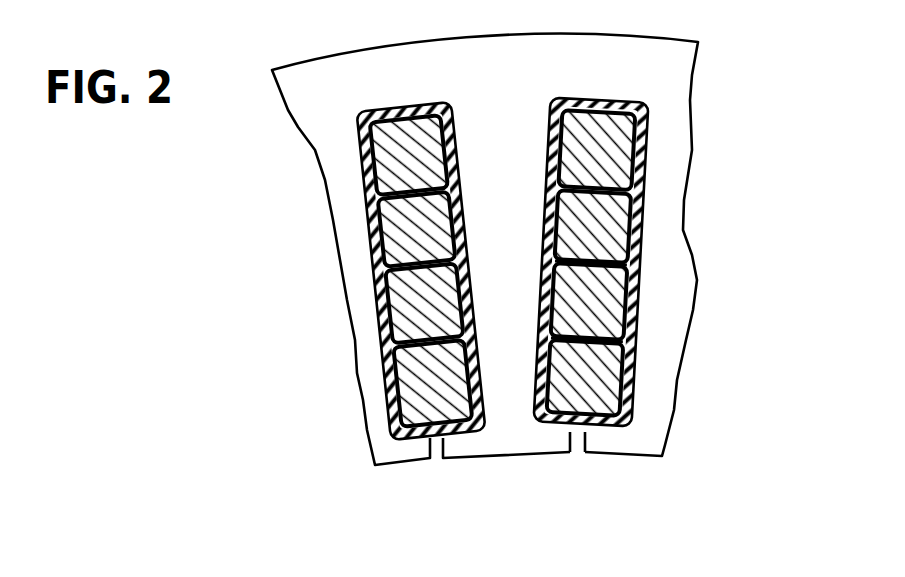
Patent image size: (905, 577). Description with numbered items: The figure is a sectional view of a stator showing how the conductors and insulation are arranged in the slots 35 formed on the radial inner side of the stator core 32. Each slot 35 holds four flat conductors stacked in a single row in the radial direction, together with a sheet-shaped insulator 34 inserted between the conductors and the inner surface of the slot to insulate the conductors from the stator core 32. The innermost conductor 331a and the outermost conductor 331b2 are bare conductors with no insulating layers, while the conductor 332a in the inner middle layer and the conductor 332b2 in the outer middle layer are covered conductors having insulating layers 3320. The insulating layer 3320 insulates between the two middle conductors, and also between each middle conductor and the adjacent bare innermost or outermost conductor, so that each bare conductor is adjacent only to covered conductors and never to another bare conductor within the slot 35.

The stator core 32 is at (487, 53).
The insulator 34 is at (650, 105).
The conductor in outer most layer 331b2 is at (608, 156).
The conductor in outer middle layer 332b2 is at (603, 217).
The insulating layer 3320 is at (624, 262).
The conductor in inner middle layer 332a is at (642, 289).
The conductor in inner most layer 331a is at (597, 376).
The slot 35 is at (580, 438).